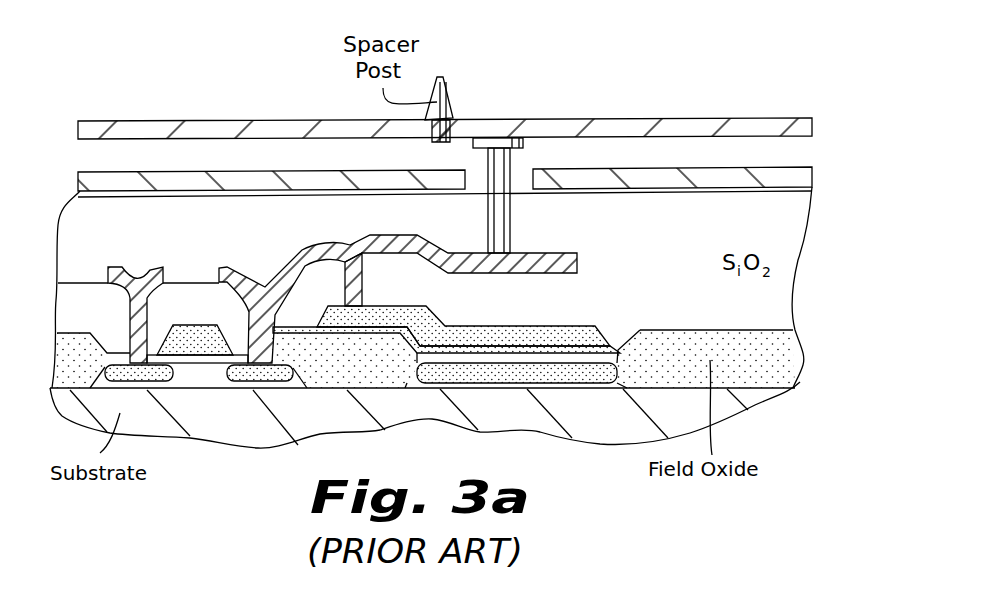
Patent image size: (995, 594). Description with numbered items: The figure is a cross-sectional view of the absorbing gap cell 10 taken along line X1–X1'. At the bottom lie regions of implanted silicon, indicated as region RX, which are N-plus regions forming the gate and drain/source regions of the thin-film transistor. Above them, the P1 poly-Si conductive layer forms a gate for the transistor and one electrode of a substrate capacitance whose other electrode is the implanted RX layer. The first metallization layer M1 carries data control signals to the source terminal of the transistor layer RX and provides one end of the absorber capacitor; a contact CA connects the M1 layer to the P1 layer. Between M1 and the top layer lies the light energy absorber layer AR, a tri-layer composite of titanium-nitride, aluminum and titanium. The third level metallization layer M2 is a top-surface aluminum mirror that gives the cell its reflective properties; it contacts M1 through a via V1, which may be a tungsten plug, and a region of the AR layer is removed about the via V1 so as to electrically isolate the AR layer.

The absorbing gap cell 10 is at (698, 68).
The third level metallization layer M2 is at (103, 130).
The light energy absorber layer AR is at (198, 185).
The first metallization layer M1 is at (220, 265).
The via V1 is at (512, 212).
The contact CA is at (362, 307).
The poly-Si conductive layer P1 is at (612, 327).
The region of implanted silicon RX is at (168, 378).